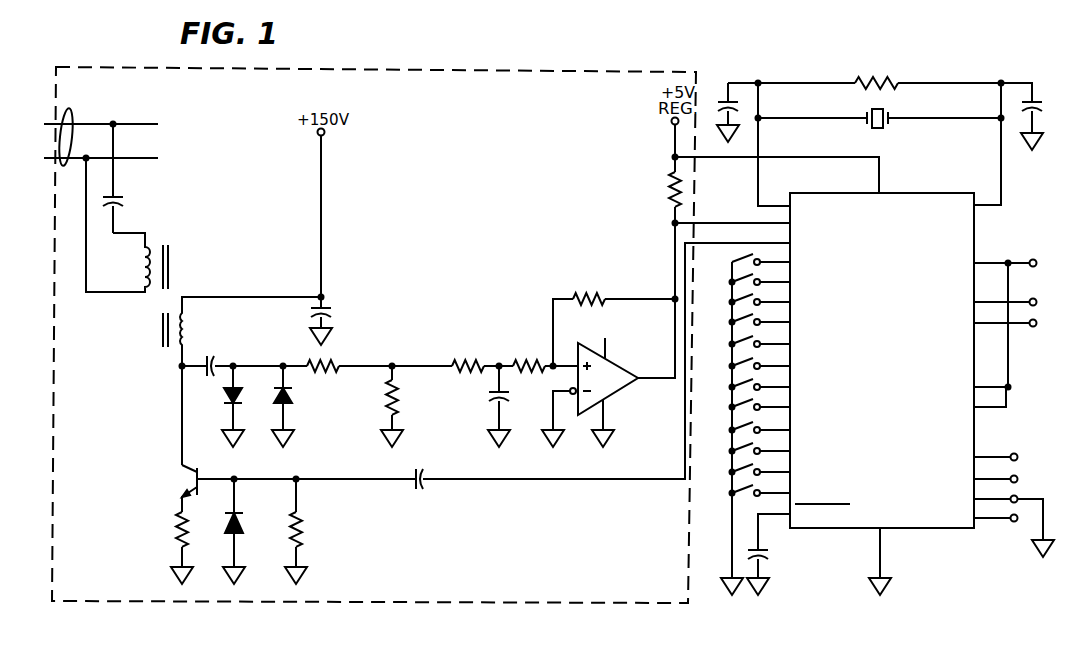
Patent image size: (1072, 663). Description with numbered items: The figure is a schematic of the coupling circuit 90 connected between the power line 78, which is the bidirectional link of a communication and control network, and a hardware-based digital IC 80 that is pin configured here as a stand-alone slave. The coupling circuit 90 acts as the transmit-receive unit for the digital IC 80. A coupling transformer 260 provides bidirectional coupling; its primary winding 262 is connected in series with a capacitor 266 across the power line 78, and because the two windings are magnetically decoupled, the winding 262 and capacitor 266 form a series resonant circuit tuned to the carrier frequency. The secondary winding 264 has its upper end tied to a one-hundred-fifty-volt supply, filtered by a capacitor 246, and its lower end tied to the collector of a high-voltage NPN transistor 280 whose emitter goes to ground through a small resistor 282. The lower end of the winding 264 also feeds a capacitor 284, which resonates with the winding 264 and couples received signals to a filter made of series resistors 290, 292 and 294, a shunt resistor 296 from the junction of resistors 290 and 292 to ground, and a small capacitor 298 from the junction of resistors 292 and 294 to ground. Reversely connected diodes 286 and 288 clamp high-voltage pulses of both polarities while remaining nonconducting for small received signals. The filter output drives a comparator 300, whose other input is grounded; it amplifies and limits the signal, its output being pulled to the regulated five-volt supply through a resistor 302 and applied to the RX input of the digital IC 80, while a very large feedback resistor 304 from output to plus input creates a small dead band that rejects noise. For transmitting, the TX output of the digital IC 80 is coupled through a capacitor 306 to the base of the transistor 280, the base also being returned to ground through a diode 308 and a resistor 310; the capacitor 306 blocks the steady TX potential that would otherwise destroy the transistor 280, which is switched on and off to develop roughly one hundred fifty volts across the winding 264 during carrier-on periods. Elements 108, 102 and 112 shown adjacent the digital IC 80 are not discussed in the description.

The power line 78 is at (101, 128).
The coupling circuit 90 is at (374, 335).
The capacitor 266 is at (118, 203).
The coupling transformer 260 is at (148, 252).
The primary winding 262 is at (143, 268).
The secondary winding 264 is at (186, 325).
The capacitor 246 is at (328, 303).
The capacitor 284 is at (217, 360).
The diode 286 is at (226, 395).
The diode 288 is at (288, 400).
The series resistor 290 is at (336, 362).
The series resistor 292 is at (454, 363).
The series resistor 294 is at (519, 362).
The shunt resistor 296 is at (398, 406).
The capacitor 298 is at (493, 400).
The comparator 300 is at (612, 396).
The resistor 302 is at (672, 205).
The resistor 304 is at (587, 296).
The capacitor 306 is at (425, 485).
The transistor 280 is at (181, 488).
The resistor 282 is at (176, 545).
The diode 308 is at (238, 528).
The resistor 310 is at (300, 530).
The digital IC 80 is at (977, 230).
The resistor 108 is at (883, 78).
The crystal 102 is at (886, 110).
The capacitor 112 is at (765, 556).